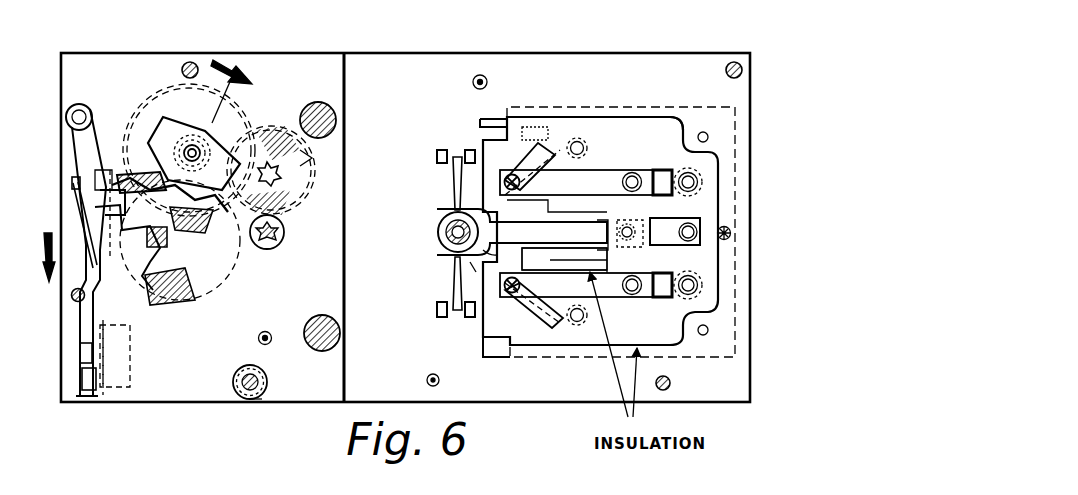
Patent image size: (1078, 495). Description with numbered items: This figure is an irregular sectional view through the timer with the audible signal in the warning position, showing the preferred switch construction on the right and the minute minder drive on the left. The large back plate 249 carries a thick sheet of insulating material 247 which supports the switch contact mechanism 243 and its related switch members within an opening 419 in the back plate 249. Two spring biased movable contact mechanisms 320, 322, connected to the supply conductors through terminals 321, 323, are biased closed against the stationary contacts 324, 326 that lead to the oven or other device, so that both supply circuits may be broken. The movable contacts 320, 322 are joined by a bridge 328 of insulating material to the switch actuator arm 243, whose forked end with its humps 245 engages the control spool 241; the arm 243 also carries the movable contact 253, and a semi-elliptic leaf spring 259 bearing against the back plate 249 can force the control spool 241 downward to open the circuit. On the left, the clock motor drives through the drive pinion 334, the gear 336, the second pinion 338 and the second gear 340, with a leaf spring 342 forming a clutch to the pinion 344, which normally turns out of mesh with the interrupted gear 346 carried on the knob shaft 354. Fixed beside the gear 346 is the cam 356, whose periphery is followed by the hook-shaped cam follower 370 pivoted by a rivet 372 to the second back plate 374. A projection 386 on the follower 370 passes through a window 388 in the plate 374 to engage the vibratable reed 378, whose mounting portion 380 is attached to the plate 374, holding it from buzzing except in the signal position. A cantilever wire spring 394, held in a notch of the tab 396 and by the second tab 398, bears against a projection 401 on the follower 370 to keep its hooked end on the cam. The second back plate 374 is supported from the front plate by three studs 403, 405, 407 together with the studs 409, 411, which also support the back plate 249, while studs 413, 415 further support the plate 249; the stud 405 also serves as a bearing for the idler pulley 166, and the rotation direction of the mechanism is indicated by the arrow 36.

The direction of movement arrow 36 is at (139, 150).
The idler pulley 166 is at (267, 379).
The control spool 241 is at (437, 233).
The switch actuator arm 243 is at (473, 200).
The humps 245 is at (443, 211).
The member of insulating material 247 is at (740, 220).
The large back plate 249 is at (568, 60).
The movable contact 253 is at (473, 268).
The semi-elliptic leaf spring 259 is at (493, 248).
The spring biased movable contact mechanism 320 is at (600, 177).
The terminal 321 is at (707, 177).
The spring biased movable contact mechanism 322 is at (607, 287).
The terminal 323 is at (703, 290).
The stationary contact 324 is at (550, 148).
The stationary contact 326 is at (514, 300).
The bridge of electrical insulating material 328 is at (607, 261).
The drive pinion 334 is at (284, 235).
The gear 336 is at (312, 158).
The second pinion 338 is at (280, 174).
The second gear 340 is at (238, 104).
The leaf spring 342 is at (160, 120).
The pinion 344 is at (192, 145).
The interrupted gear 346 is at (204, 282).
The knob shaft 354 is at (123, 251).
The cam 356 is at (147, 264).
The cam follower 370 is at (70, 106).
The rivet 372 is at (66, 118).
The second back plate 374 is at (327, 58).
The vibratable reed 378 is at (113, 381).
The mounting portion 380 is at (130, 364).
The projection 386 is at (107, 178).
The window 388 is at (100, 180).
The cantilever wire spring 394 is at (88, 326).
The tab 396 is at (74, 403).
The second tab 398 is at (84, 363).
The projection 401 is at (72, 197).
The stud 403 is at (72, 295).
The stud 405 is at (257, 398).
The stud 407 is at (190, 62).
The stud 409 is at (340, 336).
The stud 411 is at (334, 117).
The stud 413 is at (670, 383).
The stud 415 is at (733, 62).
The opening 419 is at (645, 125).